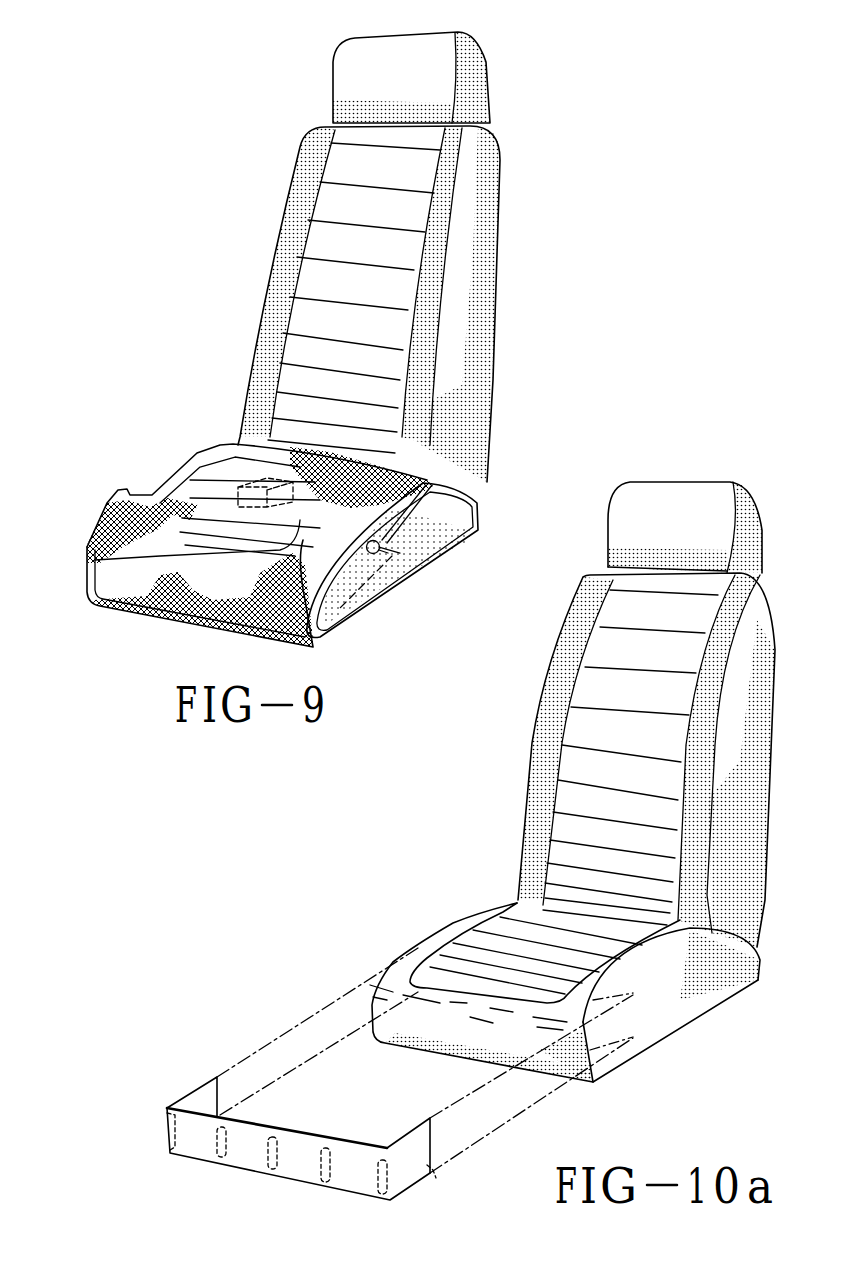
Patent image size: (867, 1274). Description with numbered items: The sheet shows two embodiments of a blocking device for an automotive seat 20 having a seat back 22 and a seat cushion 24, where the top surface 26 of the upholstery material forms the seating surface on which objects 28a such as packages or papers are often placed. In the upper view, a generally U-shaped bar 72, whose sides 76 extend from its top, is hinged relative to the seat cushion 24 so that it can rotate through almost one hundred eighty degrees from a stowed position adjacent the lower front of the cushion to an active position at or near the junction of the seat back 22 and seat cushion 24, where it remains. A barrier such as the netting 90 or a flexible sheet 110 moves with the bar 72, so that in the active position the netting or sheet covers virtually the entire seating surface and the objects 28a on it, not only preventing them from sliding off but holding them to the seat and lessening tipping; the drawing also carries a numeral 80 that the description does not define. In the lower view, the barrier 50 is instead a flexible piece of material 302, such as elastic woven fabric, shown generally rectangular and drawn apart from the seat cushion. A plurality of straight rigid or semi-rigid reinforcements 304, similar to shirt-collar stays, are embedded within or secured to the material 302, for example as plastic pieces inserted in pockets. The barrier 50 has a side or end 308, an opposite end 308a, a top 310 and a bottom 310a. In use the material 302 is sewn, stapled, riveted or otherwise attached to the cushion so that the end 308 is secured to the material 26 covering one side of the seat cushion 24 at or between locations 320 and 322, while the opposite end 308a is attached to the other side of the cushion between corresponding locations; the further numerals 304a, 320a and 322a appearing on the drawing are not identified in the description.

In FIG. 9, the automotive seat 20 is at (257, 187).
In FIG. 10A, the automotive seat 20 is at (778, 520).
In FIG. 9, the seat back 22 is at (320, 287).
In FIG. 10A, the seat back 22 is at (592, 733).
In FIG. 9, the seat cushion 24 is at (167, 480).
In FIG. 10A, the seat cushion 24 is at (450, 920).
In FIG. 10A, the top surface 26 is at (483, 940).
In FIG. 9, the objects 28a is at (262, 478).
In FIG. 9, the bar 72 is at (280, 443).
In FIG. 9, the sides 76 is at (417, 514).
In FIG. 9, the seat frame 80 is at (472, 562).
In FIG. 9, the netting 90 is at (225, 527).
In FIG. 9, the flexible sheet 110 is at (110, 530).
In FIG. 10A, the barrier 50 is at (157, 1098).
In FIG. 10A, the flexible material 302 is at (183, 1157).
In FIG. 10A, the reinforcements 304 is at (220, 1153).
In FIG. 10A, the end tab 304a is at (167, 1133).
In FIG. 10A, the side 308 is at (407, 1152).
In FIG. 10A, the opposite end 308a is at (197, 1100).
In FIG. 10A, the top 310 is at (313, 1135).
In FIG. 10A, the bottom 310a is at (297, 1185).
In FIG. 10A, the location 320 is at (633, 995).
In FIG. 10A, the bolster trim line 320a is at (418, 950).
In FIG. 10A, the location 322 is at (633, 1038).
In FIG. 10A, the side panel trim line 322a is at (418, 992).